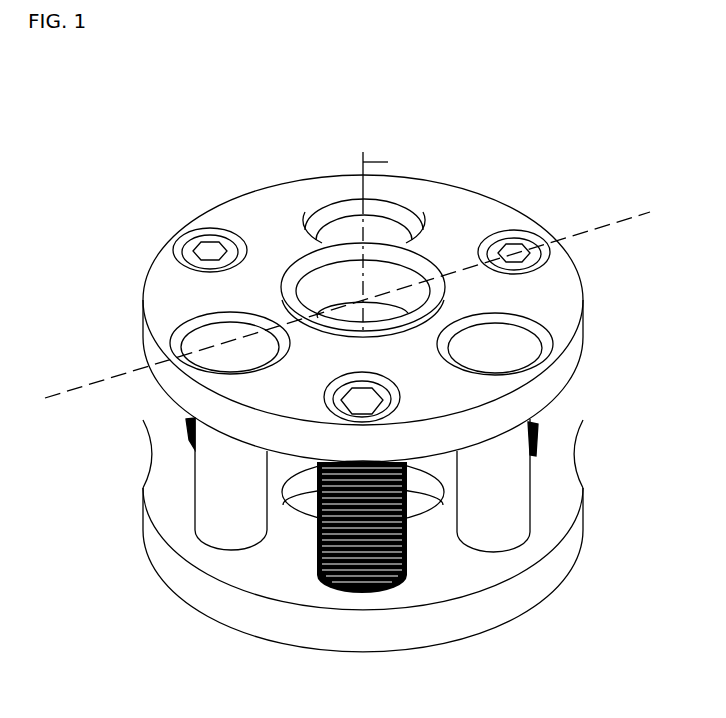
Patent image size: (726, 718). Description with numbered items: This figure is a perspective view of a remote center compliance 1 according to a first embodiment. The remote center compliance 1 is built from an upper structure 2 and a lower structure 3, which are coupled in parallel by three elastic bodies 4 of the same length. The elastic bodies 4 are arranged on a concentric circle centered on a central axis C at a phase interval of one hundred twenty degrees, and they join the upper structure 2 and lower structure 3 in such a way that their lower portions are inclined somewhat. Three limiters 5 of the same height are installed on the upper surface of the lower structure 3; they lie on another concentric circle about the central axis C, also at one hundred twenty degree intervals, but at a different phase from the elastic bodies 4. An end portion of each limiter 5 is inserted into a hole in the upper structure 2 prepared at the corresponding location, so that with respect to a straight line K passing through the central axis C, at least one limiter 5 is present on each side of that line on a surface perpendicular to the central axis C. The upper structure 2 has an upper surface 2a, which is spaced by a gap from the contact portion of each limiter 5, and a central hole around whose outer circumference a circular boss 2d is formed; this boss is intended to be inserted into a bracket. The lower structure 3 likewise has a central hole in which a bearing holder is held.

The remote center compliance 1 is at (80, 247).
The upper structure 2 is at (419, 282).
The upper surface of upper structure 2a is at (457, 207).
The circular boss 2d is at (297, 247).
The lower structure 3 is at (540, 606).
The elastic body 4 is at (410, 562).
The limiter 5 is at (170, 522).
The central axis C is at (372, 164).
The straight line passing through the central axis K is at (623, 217).